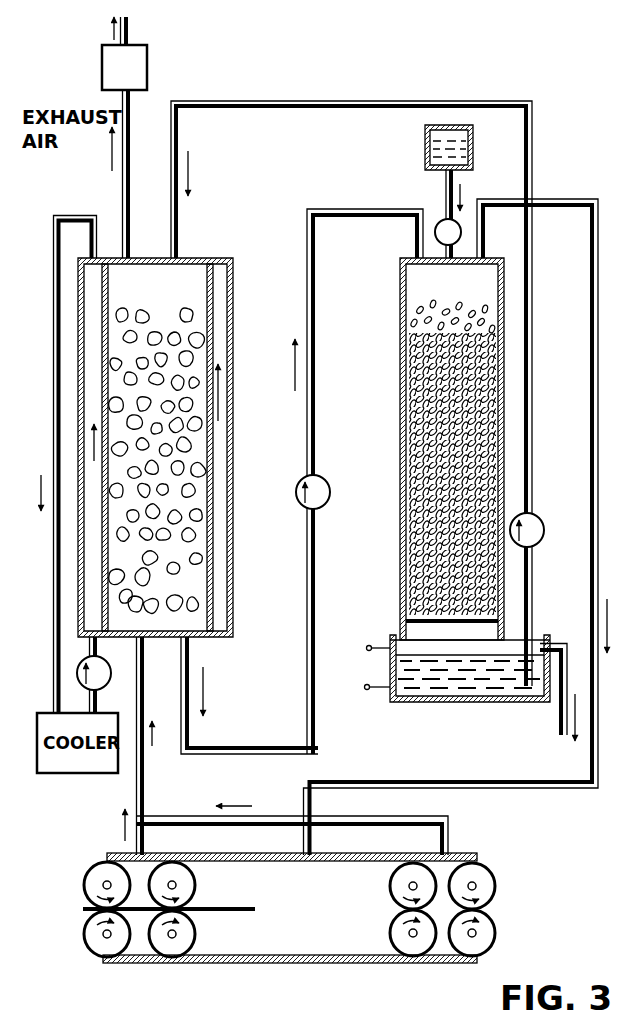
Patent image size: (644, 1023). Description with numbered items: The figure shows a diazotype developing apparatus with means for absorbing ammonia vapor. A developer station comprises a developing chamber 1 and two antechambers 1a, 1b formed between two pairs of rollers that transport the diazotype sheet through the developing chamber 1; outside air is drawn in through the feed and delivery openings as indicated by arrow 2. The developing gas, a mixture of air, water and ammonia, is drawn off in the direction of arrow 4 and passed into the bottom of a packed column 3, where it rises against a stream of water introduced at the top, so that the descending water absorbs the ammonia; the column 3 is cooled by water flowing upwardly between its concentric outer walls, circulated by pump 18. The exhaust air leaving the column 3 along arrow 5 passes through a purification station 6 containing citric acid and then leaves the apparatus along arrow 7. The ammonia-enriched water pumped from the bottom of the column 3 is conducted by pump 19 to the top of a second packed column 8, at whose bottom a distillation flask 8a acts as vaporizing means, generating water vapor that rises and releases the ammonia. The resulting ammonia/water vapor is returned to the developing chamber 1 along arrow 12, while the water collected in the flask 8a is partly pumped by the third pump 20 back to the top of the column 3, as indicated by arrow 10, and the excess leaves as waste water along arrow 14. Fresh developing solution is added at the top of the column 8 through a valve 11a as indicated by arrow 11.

The developing chamber 1 is at (287, 936).
The antechamber 1a is at (137, 942).
The antechamber 1b is at (445, 942).
The arrow indicating air drawn in 2 is at (82, 894).
The packed column 3 is at (234, 580).
The arrow indicating developing gas flow 4 is at (153, 745).
The arrow indicating exhaust air 5 is at (112, 161).
The purification station 6 is at (105, 66).
The arrow indicating exhaust air leaving apparatus 7 is at (114, 30).
The second packed column 8 is at (401, 576).
The distillation flask 8a is at (390, 670).
The arrow indicating carrier medium recirculation 10 is at (188, 163).
The arrow indicating fresh developing solution supply 11 is at (463, 187).
The valve 11a is at (437, 222).
The arrow indicating developer medium return 12 is at (607, 630).
The arrow indicating waste water withdrawal 14 is at (573, 740).
The pump 18 is at (77, 672).
The pump 19 is at (300, 483).
The third pump 20 is at (538, 514).